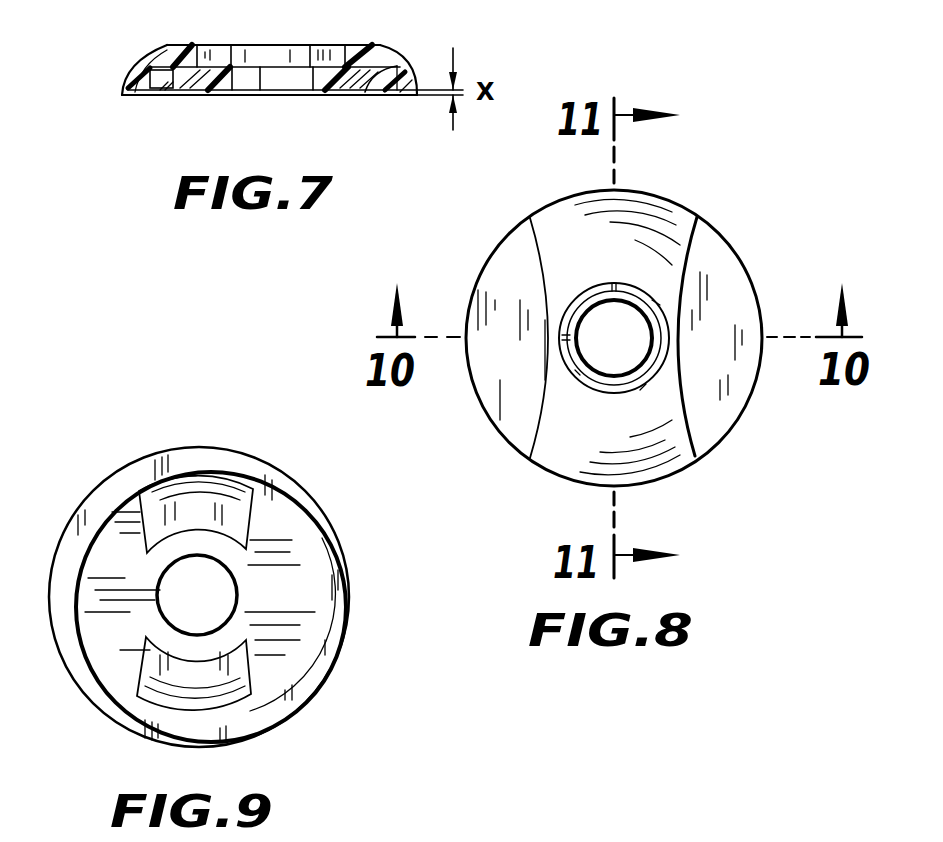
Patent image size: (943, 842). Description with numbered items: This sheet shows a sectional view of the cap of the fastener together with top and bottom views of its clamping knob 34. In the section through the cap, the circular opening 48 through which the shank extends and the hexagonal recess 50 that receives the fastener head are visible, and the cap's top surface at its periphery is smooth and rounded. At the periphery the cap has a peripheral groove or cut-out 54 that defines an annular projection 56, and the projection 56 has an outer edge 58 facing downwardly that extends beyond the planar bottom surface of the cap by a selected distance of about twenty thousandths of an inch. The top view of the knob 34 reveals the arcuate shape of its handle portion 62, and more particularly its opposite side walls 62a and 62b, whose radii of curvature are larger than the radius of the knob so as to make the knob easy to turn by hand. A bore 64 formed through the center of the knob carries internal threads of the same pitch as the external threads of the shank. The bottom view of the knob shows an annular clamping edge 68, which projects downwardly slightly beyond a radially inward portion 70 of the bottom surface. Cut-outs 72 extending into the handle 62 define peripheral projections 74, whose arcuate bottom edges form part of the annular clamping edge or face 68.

In FIG. 8, the clamping knob 34 is at (710, 267).
In FIG. 7, the circular opening 48 is at (273, 75).
In FIG. 7, the hexagonal recess 50 is at (275, 55).
In FIG. 7, the peripheral groove 54 is at (155, 78).
In FIG. 7, the annular projection 56 is at (142, 50).
In FIG. 7, the outer edge 58 is at (180, 98).
In FIG. 8, the handle portion 62 is at (570, 425).
In FIG. 8, the side wall 62a is at (545, 275).
In FIG. 8, the side wall 62b is at (683, 407).
In FIG. 8, the bore 64 is at (600, 358).
In FIG. 9, the bore 64 is at (222, 579).
In FIG. 9, the annular clamping edge 68 is at (322, 555).
In FIG. 9, the radially inward portion 70 is at (118, 670).
In FIG. 9, the cut-outs 72 is at (242, 700).
In FIG. 9, the peripheral projections 74 is at (192, 457).